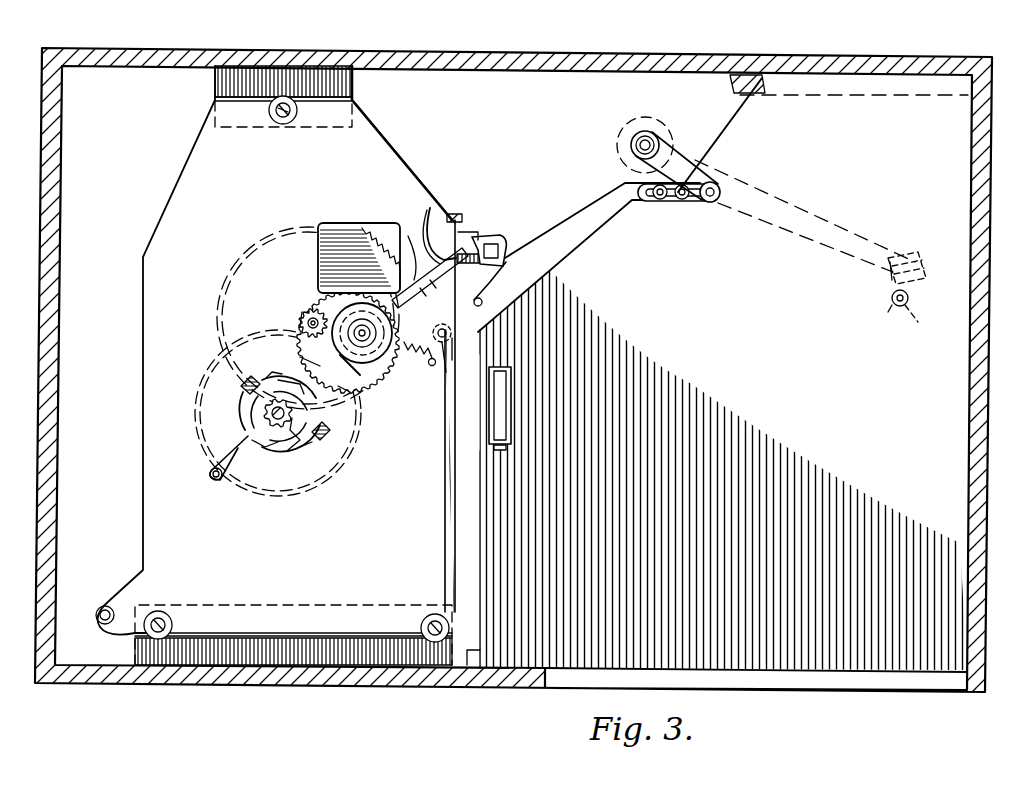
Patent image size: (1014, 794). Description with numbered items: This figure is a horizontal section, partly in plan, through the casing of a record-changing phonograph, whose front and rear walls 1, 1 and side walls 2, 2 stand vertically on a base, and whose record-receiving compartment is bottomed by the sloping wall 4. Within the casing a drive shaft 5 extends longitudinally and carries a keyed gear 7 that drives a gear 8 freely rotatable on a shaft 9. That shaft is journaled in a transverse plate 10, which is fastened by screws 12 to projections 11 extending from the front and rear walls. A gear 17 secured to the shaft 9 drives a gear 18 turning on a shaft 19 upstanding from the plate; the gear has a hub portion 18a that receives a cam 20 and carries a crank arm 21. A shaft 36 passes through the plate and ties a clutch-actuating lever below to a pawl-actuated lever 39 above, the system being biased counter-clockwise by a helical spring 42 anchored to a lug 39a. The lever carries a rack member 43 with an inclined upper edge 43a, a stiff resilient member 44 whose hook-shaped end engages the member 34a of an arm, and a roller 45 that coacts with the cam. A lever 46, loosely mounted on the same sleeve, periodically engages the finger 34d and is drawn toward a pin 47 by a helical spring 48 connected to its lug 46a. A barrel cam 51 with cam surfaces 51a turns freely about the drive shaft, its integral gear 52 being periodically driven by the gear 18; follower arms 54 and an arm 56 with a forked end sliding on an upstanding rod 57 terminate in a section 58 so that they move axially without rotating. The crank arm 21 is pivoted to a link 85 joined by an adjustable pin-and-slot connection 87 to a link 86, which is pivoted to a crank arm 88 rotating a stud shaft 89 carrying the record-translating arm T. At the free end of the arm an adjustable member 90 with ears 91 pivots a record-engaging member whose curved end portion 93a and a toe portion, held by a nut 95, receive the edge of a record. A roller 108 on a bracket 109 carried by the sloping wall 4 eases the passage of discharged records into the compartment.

The front and rear walls 1 is at (582, 50).
The side walls 2 is at (120, 426).
The sloping wall 4 is at (903, 645).
The drive shaft 5 is at (264, 448).
The gear 7 is at (290, 446).
The gear 8 is at (225, 290).
The shaft 9 is at (302, 314).
The plate 10 is at (143, 356).
The projections 11 is at (222, 88).
The screws 12 is at (286, 121).
The gear 17 is at (300, 324).
The gear 18 is at (345, 300).
The hub portion 18a is at (360, 384).
The shaft 19 is at (372, 366).
The cam 20 is at (332, 356).
The crank arm 21 is at (372, 224).
The member of arm 34a is at (458, 216).
The finger 34d is at (484, 252).
The shaft 36 is at (458, 364).
The pawl-actuated lever 39 is at (490, 300).
The lug 39a is at (410, 360).
The helical spring 42 is at (432, 368).
The rack member 43 is at (494, 266).
The inclined upper edge 43a is at (506, 246).
The resilient member 44 is at (426, 210).
The roller 45 is at (418, 284).
The lever 46 is at (508, 260).
The lug 46a is at (480, 308).
The pin 47 is at (404, 244).
The helical spring 48 is at (462, 342).
The barrel cam 51 is at (326, 440).
The cam surfaces 51a is at (242, 414).
The gear 52 is at (200, 379).
The arm 54 is at (318, 445).
The arm 56 is at (232, 452).
The rod 57 is at (210, 480).
The section 58 is at (284, 372).
The link 85 is at (610, 210).
The link 86 is at (704, 200).
The pin-and-slot connection 87 is at (680, 204).
The crank arm 88 is at (702, 166).
The stud shaft 89 is at (632, 130).
The member 90 is at (920, 258).
The ears 91 is at (888, 272).
The curved end portion 93a is at (892, 306).
The nut 95 is at (914, 316).
The roller 108 is at (516, 372).
The bracket 109 is at (500, 450).
The record-translating member T is at (806, 205).